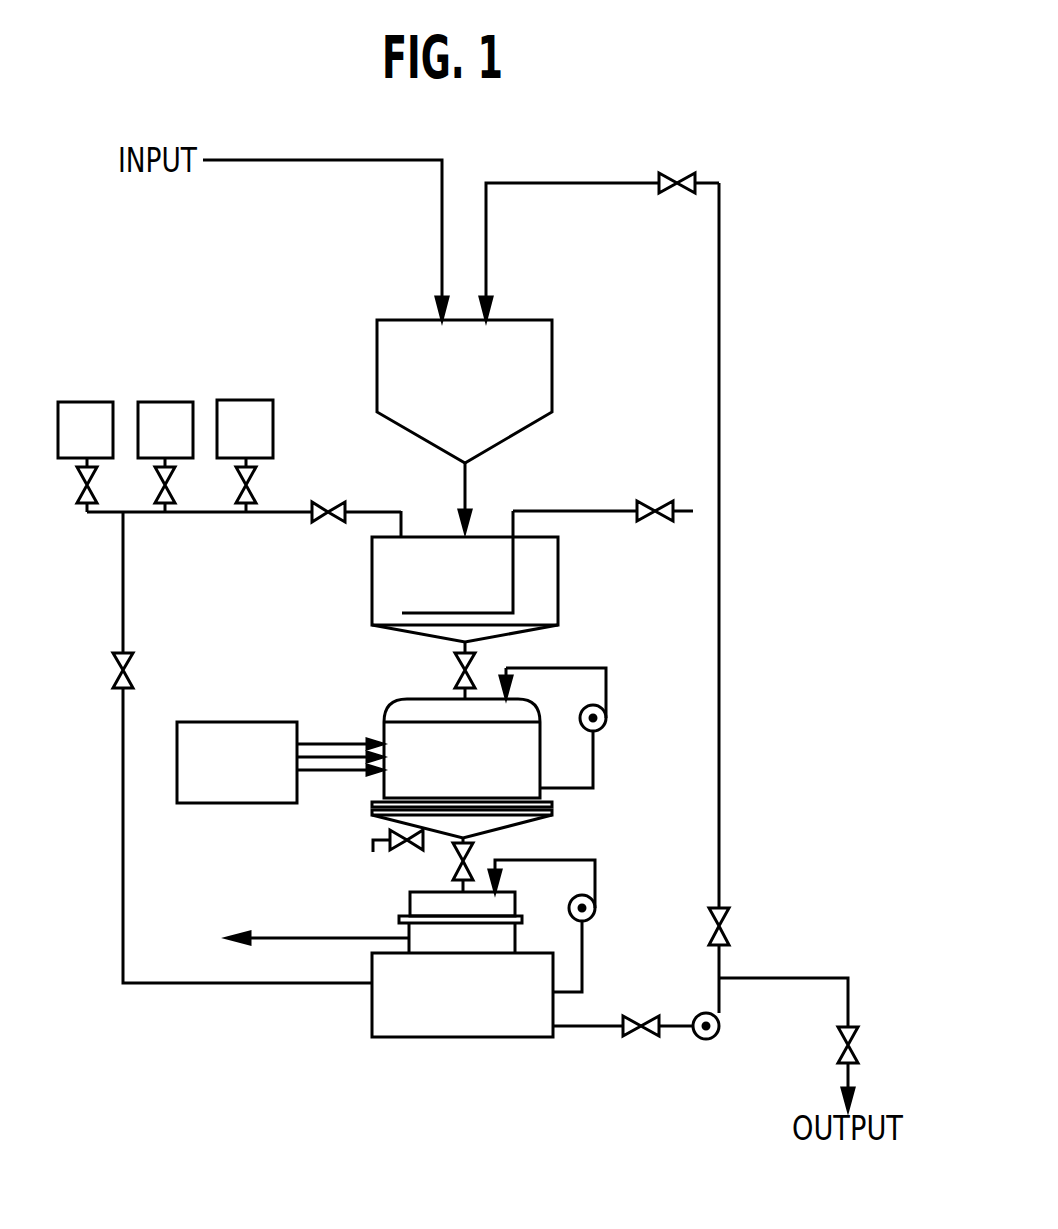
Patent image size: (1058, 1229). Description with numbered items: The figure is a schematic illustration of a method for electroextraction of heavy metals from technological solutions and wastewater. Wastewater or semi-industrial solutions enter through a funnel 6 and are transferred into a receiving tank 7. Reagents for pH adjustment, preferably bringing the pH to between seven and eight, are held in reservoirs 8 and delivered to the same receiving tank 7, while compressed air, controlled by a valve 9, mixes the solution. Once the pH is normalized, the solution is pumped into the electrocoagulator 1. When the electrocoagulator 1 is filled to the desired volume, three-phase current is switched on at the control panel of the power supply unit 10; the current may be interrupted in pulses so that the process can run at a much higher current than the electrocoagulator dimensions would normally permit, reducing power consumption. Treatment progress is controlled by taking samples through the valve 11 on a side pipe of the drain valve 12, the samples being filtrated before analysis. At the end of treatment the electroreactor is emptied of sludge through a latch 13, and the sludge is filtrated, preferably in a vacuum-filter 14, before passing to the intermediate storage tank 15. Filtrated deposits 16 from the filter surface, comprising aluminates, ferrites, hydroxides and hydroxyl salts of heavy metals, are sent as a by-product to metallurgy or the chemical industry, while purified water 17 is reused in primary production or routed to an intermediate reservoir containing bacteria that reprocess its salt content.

The electrocoagulator 1 is at (386, 779).
The funnel 6 is at (393, 318).
The receiving tank 7 is at (546, 603).
The reservoirs 8 is at (143, 401).
The valve 9 is at (648, 507).
The power supply unit 10 is at (250, 722).
The valve 11 is at (396, 855).
The drain valve 12 is at (467, 835).
The latch 13 is at (457, 866).
The vacuum-filter 14 is at (516, 892).
The intermediate storage tank 15 is at (372, 1012).
The filtrated deposits 16 is at (262, 937).
The purified water 17 is at (721, 761).